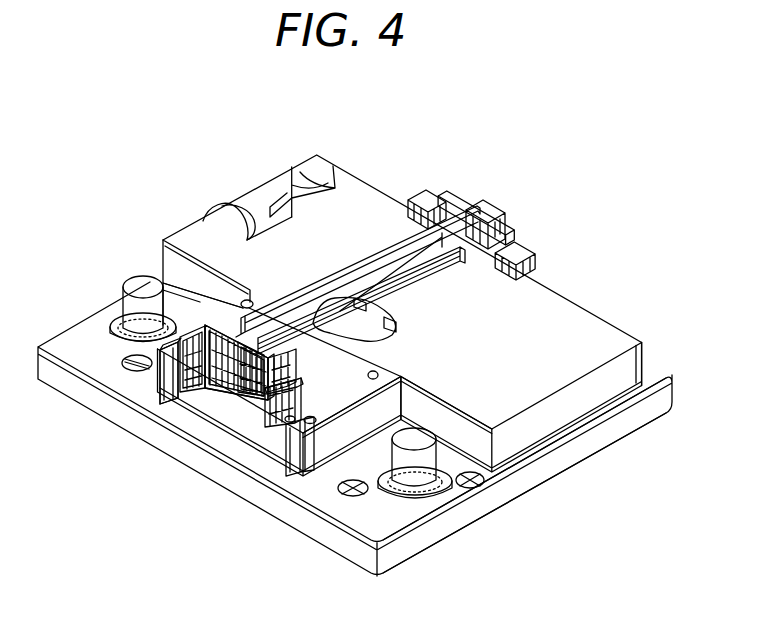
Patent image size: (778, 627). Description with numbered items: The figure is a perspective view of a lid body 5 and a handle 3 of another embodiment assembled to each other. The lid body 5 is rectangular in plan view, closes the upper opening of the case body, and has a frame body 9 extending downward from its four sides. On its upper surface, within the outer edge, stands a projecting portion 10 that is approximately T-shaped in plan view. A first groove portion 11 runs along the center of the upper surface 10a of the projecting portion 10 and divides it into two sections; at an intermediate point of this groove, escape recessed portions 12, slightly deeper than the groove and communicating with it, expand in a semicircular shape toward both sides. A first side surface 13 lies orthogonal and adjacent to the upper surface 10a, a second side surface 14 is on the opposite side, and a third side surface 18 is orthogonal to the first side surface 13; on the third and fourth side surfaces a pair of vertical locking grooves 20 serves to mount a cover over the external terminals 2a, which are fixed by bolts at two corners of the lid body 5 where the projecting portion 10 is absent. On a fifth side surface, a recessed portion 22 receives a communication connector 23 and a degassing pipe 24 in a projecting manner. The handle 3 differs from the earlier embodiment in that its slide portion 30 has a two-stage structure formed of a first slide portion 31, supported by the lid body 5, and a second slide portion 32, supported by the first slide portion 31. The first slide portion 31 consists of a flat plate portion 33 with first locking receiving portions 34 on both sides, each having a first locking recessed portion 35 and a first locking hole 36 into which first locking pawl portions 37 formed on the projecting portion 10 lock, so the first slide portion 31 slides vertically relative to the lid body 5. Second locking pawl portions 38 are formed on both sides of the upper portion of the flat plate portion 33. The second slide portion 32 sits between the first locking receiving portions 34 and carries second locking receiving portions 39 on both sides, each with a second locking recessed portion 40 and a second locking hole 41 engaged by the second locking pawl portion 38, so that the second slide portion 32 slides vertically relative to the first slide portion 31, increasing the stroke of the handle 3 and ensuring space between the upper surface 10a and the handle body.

The external terminal 2a is at (425, 480).
The handle 3 is at (466, 172).
The lid body 5 is at (663, 441).
The frame body 9 is at (583, 452).
The projecting portion 10 is at (555, 300).
The upper surface of the projecting portion 10a is at (354, 188).
The first groove portion 11 is at (430, 285).
The escape recessed portion 12 is at (388, 324).
The first side surface 13 is at (128, 372).
The second side surface 14 is at (641, 335).
The third side surface 18 is at (355, 494).
The locking groove 20 is at (382, 374).
The recessed portion 22 is at (290, 165).
The communication connector 23 is at (285, 200).
The degassing pipe 24 is at (230, 208).
The slide portion 30 is at (136, 503).
The first slide portion 31 is at (182, 398).
The second slide portion 32 is at (222, 398).
The flat plate portion 33 is at (484, 235).
The first locking receiving portion 34 is at (416, 202).
The first locking recessed portion 35 is at (288, 362).
The first locking hole 36 is at (296, 390).
The first locking pawl portion 37 is at (303, 478).
The second locking pawl portion 38 is at (194, 390).
The second locking receiving portion 39 is at (205, 307).
The second locking recessed portion 40 is at (163, 325).
The second locking hole 41 is at (122, 327).